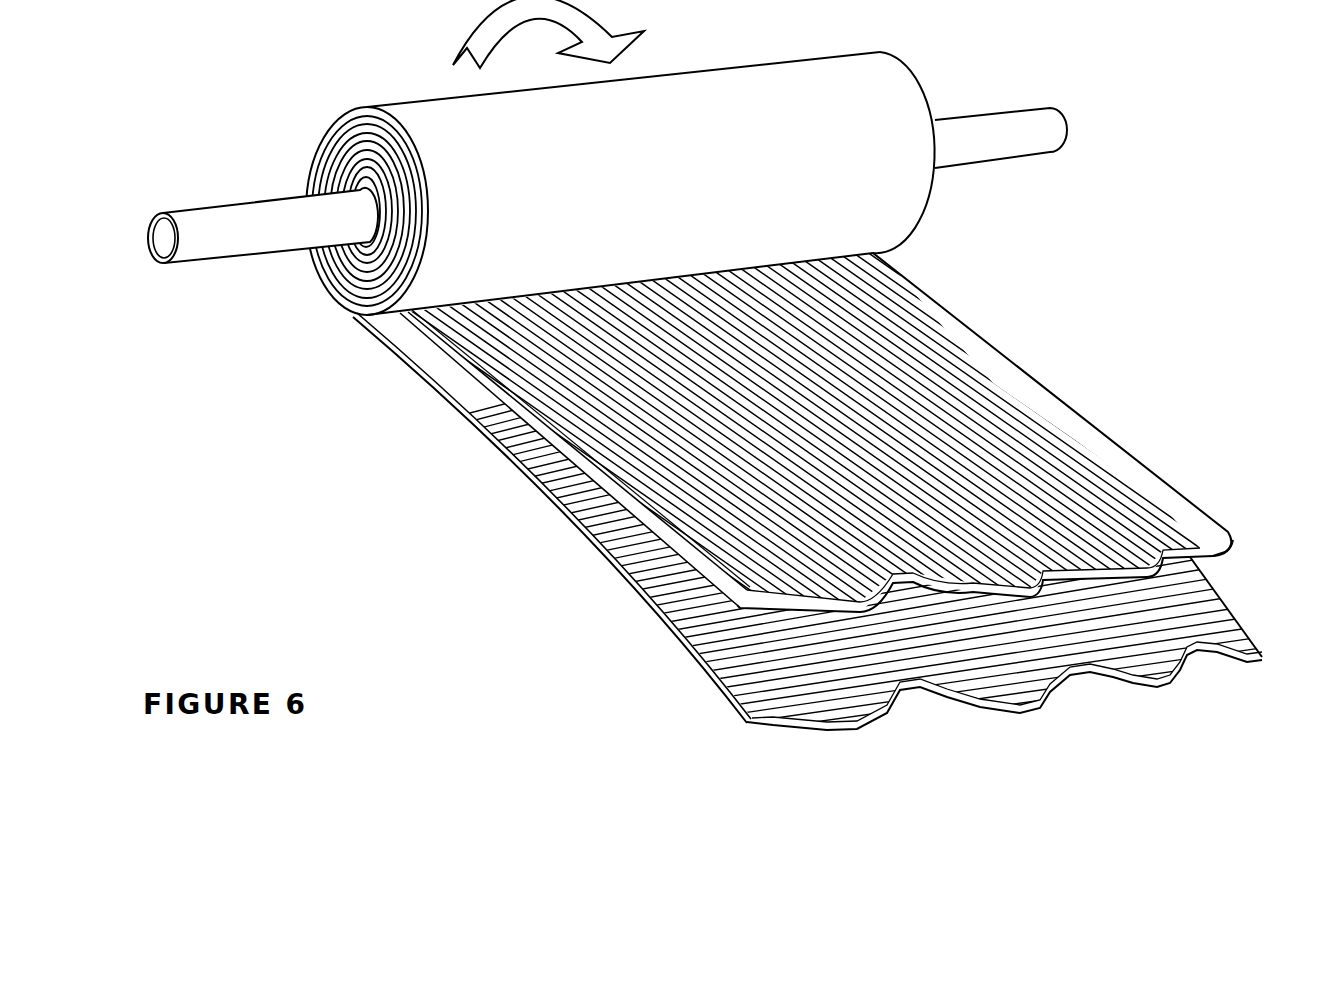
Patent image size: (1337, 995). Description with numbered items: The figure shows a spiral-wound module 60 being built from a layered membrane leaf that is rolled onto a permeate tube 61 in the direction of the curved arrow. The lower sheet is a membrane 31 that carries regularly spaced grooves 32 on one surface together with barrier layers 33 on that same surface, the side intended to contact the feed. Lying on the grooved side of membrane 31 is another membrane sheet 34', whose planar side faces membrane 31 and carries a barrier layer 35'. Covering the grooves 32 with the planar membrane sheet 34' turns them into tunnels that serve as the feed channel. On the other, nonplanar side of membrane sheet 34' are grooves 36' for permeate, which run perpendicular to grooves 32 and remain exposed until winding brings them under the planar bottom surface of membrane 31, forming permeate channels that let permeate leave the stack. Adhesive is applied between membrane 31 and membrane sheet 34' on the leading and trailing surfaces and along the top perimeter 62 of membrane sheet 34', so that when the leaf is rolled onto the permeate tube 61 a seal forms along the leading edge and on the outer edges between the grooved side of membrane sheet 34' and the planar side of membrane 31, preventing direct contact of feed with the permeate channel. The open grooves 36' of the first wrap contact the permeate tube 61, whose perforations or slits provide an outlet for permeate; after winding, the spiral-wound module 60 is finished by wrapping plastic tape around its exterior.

The membrane 31 is at (660, 617).
The grooves 32 is at (630, 536).
The barrier layers 33 is at (548, 493).
The membrane sheet 34' is at (1022, 432).
The barrier layer 35' is at (1272, 565).
The grooves 36' is at (668, 436).
The spiral-wound module 60 is at (1160, 758).
The permeate tube 61 is at (985, 130).
The top perimeter 62 is at (523, 412).